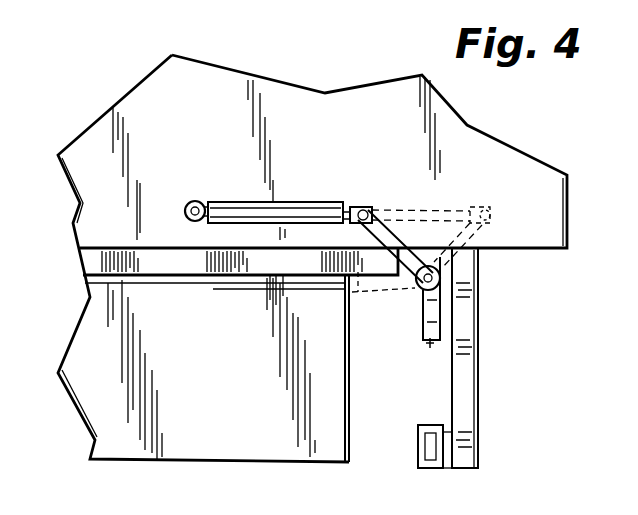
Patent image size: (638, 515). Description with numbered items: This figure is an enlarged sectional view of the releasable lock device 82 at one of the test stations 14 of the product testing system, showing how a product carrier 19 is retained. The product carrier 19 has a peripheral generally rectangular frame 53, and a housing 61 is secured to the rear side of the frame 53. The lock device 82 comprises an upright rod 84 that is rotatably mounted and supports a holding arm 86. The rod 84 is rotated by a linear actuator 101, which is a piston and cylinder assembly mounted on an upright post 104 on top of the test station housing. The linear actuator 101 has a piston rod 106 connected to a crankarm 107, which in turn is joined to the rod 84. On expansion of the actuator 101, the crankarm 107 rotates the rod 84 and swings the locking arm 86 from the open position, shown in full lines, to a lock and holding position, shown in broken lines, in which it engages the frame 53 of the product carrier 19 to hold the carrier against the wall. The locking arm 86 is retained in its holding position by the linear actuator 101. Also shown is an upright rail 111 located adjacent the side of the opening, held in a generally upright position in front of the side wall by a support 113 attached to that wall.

The test station 14 is at (470, 126).
The frame 53 is at (96, 261).
The housing 61 is at (222, 366).
The product carrier 19 is at (246, 440).
The linear actuator 101 is at (286, 202).
The upright post 104 is at (194, 200).
The piston rod 106 is at (365, 206).
The crankarm 107 is at (387, 230).
The upright rod 84 is at (420, 286).
The lock device 82 is at (412, 325).
The holding arm 86 is at (395, 322).
The support 113 is at (474, 352).
The upright rail 111 is at (412, 470).